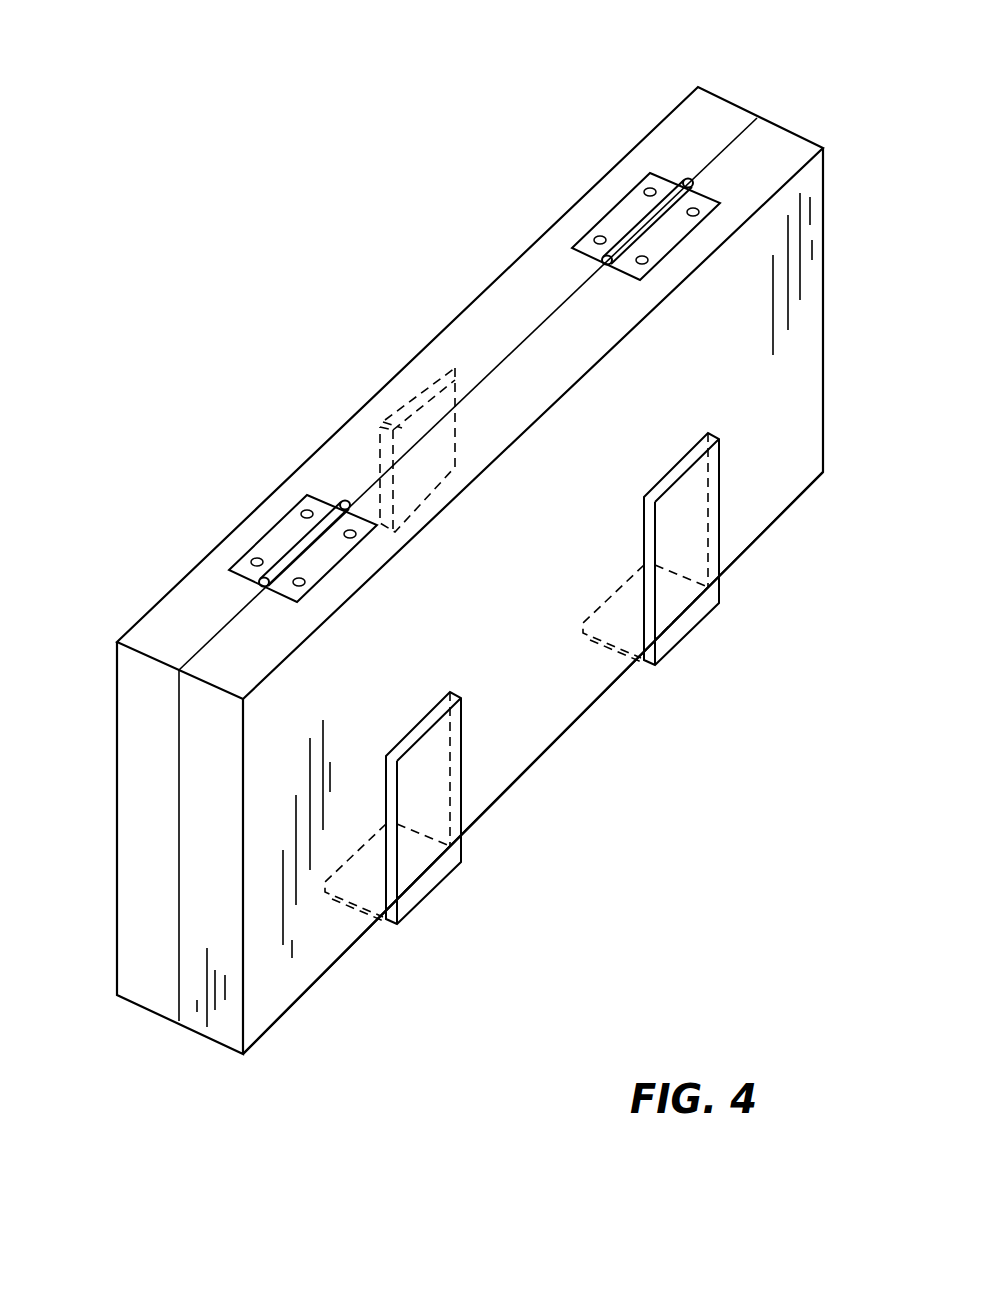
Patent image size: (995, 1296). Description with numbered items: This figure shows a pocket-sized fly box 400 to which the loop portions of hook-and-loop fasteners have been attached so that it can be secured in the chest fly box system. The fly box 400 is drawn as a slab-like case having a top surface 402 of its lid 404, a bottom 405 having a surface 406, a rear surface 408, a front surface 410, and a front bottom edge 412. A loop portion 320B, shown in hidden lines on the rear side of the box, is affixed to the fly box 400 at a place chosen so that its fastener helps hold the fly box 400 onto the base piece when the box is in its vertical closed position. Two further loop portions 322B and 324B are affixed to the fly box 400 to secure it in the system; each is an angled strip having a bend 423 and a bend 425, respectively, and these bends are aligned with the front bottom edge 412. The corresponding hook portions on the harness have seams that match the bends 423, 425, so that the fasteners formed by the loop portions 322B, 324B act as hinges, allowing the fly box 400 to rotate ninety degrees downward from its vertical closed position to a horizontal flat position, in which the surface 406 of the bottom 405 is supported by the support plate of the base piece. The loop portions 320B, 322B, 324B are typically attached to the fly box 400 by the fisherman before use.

The pocket-sized fly box 400 is at (228, 158).
The top surface 402 is at (178, 562).
The lid 404 is at (679, 130).
The bottom 405 is at (772, 158).
The surface of bottom 406 is at (533, 601).
The rear surface 408 is at (470, 393).
The front surface 410 is at (292, 1022).
The front bottom edge 412 is at (589, 712).
The loop portion 320B is at (383, 422).
The loop portion 322B is at (697, 537).
The bend 423 is at (700, 635).
The loop portion 324B is at (430, 812).
The bend 425 is at (423, 902).